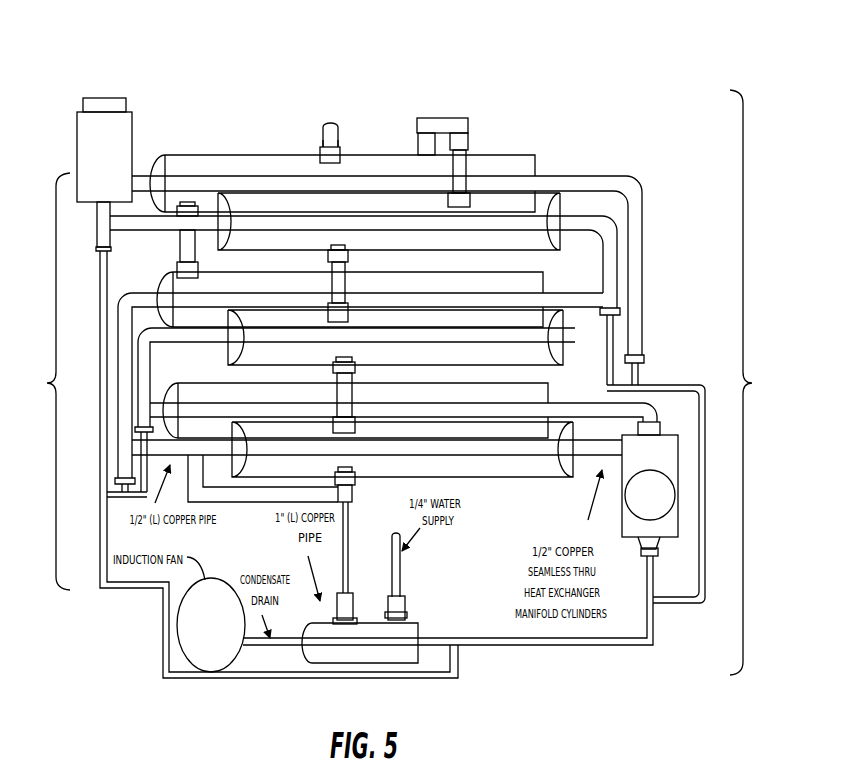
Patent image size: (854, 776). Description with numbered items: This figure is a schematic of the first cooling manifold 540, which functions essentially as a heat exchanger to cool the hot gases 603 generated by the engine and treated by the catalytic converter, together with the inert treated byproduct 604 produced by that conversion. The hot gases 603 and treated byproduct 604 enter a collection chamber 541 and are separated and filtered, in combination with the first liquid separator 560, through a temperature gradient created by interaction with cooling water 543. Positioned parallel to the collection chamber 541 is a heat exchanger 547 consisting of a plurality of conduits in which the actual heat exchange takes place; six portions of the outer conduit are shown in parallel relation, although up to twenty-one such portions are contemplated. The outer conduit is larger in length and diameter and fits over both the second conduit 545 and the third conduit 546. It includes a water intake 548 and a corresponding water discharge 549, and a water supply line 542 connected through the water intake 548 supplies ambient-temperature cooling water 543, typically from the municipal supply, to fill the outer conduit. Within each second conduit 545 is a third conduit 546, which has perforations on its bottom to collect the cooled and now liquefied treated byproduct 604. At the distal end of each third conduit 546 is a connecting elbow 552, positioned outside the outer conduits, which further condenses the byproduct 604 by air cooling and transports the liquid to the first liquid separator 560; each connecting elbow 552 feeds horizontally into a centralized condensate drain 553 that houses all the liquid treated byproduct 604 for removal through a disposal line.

The first cooling manifold 540 is at (473, 382).
The collection chamber 541 is at (90, 146).
The water supply line 542 is at (339, 137).
The cooling water 543 is at (322, 138).
The second conduit 545 is at (507, 160).
The third conduit 546 is at (573, 180).
The heat exchanger 547 is at (680, 348).
The water intake 548 is at (322, 152).
The water discharge 549 is at (445, 118).
The connecting elbow 552 is at (642, 192).
The condensate drain 553 is at (412, 633).
The first liquid separator 560 is at (177, 647).
The hot gases 603 is at (89, 94).
The treated byproduct 604 is at (116, 94).